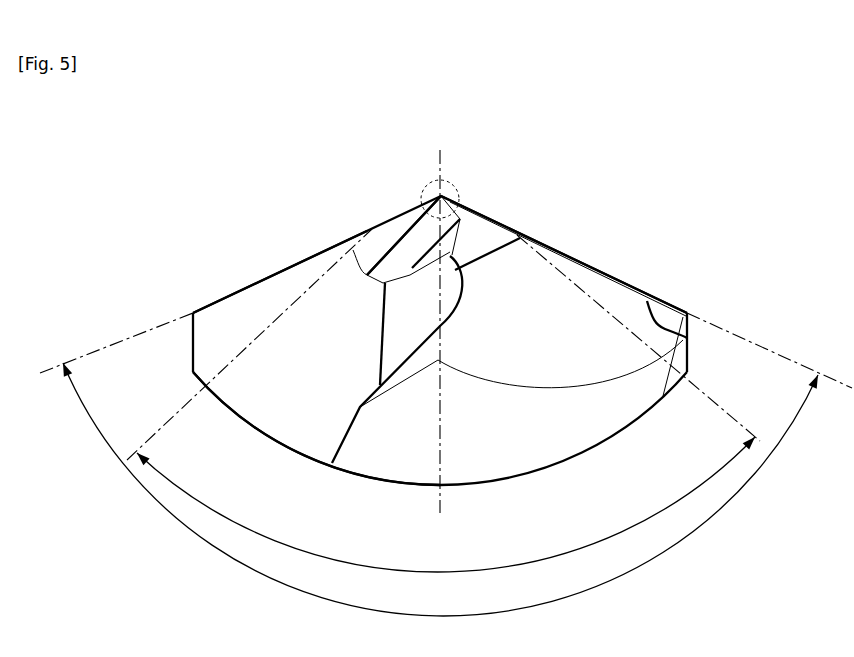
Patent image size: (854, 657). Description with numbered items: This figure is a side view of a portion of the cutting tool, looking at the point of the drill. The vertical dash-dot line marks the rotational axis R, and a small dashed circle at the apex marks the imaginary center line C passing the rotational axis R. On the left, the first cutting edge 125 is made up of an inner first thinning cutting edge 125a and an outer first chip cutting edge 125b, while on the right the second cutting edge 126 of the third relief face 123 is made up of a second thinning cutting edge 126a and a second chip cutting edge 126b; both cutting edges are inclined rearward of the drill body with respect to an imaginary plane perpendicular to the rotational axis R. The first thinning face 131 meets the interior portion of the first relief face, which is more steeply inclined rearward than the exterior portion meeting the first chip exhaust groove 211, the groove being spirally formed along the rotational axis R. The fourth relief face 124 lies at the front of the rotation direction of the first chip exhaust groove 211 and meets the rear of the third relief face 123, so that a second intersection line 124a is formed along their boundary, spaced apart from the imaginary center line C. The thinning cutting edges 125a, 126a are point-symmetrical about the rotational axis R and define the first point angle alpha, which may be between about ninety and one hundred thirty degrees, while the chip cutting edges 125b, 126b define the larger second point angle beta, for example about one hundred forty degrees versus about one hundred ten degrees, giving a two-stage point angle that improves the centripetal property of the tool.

The third relief face 123 is at (622, 287).
The fourth relief face 124 is at (592, 372).
The second intersection line 124a is at (687, 340).
The first cutting edge 125 is at (326, 230).
The first thinning cutting edge 125a is at (381, 225).
The first chip cutting edge 125b is at (318, 182).
The second cutting edge 126 is at (564, 246).
The second thinning cutting edge 126a is at (490, 218).
The second chip cutting edge 126b is at (551, 252).
The first thinning face 131 is at (418, 238).
The first chip exhaust groove 211 is at (303, 398).
The rotational axis R is at (440, 160).
The imaginary center line C is at (470, 191).
The first point angle alpha is at (446, 520).
The second point angle beta is at (440, 504).